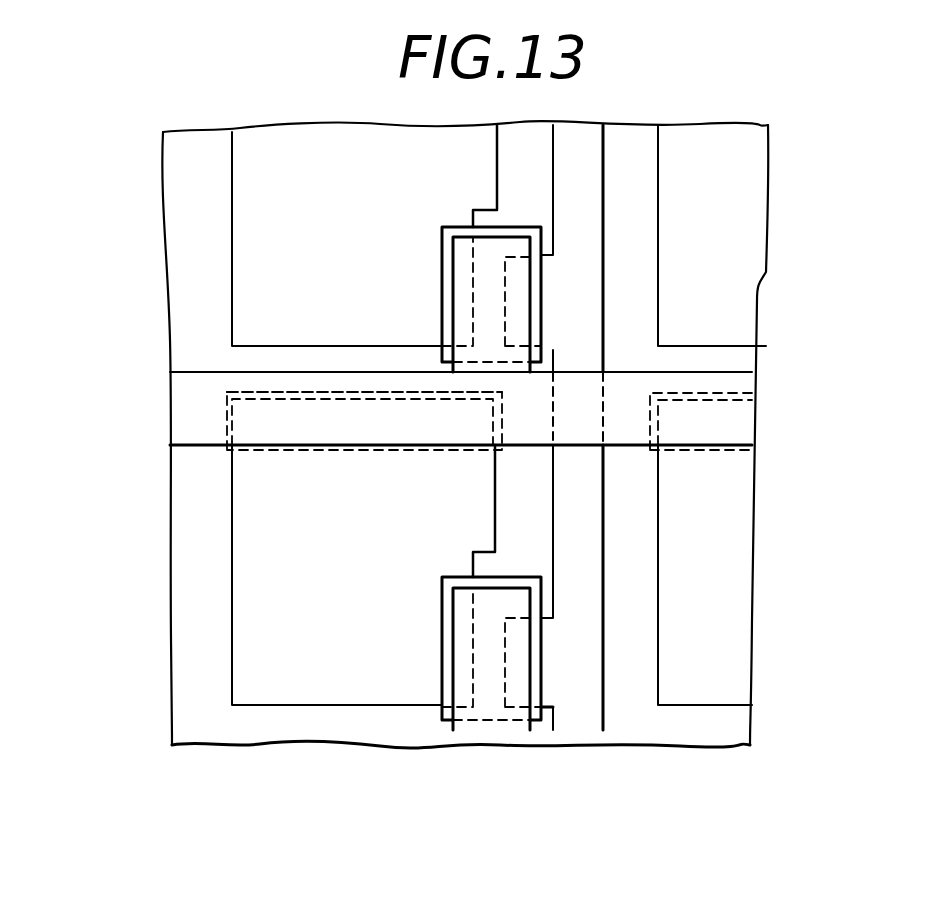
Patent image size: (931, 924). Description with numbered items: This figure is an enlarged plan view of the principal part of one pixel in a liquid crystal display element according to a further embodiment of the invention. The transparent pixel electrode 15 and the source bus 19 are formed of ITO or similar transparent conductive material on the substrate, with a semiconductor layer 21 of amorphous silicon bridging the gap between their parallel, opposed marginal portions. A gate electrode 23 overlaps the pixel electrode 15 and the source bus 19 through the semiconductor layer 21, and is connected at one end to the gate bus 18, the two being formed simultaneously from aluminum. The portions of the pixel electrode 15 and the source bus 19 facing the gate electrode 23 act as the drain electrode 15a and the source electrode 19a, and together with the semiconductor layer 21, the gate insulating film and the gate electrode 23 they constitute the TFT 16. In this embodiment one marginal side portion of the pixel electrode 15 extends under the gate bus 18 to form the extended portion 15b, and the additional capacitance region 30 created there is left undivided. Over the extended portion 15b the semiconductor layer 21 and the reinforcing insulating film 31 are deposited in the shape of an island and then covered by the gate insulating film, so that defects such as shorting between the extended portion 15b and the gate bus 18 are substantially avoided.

The pixel electrode 15 is at (253, 683).
The drain electrode 15a is at (458, 648).
The extended portion 15b is at (247, 417).
The TFT 16 is at (455, 561).
The gate bus 18 is at (745, 383).
The source bus 19 is at (640, 488).
The source electrode 19a is at (520, 668).
The semiconductor layer 21 is at (510, 580).
The gate electrode 23 is at (530, 693).
The additional capacitance region 30 is at (219, 416).
The reinforcing insulating film 31 is at (247, 392).